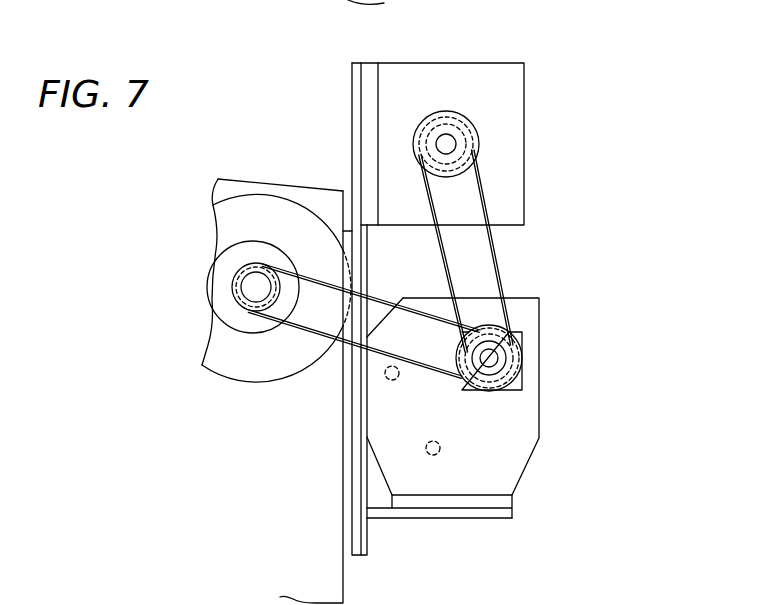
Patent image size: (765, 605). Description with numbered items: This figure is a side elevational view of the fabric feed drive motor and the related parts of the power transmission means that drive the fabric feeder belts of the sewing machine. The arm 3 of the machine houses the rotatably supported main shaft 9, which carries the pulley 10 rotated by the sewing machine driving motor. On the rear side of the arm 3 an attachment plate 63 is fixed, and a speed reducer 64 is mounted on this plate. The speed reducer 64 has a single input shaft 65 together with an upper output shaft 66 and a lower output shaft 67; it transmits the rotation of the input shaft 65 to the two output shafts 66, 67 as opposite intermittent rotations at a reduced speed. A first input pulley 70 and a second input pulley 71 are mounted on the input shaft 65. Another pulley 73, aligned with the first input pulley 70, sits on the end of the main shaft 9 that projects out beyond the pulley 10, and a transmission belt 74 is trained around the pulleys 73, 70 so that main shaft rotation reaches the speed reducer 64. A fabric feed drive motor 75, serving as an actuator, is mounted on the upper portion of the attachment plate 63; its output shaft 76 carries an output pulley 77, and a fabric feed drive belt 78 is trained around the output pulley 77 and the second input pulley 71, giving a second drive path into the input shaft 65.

The arm 3 is at (298, 193).
The main shaft 9 is at (243, 288).
The pulley 10 is at (246, 203).
The attachment plate 63 is at (367, 543).
The speed reducer 64 is at (526, 466).
The input shaft 65 is at (489, 360).
The upper output shaft 66 is at (393, 380).
The lower output shaft 67 is at (440, 453).
The first input pulley 70 is at (547, 358).
The second input pulley 71 is at (523, 357).
The pulley 73 is at (233, 305).
The transmission belt 74 is at (307, 333).
The fabric feed drive motor 75 is at (452, 63).
The output shaft 76 is at (441, 137).
The output pulley 77 is at (472, 123).
The fabric feed drive belt 78 is at (497, 256).